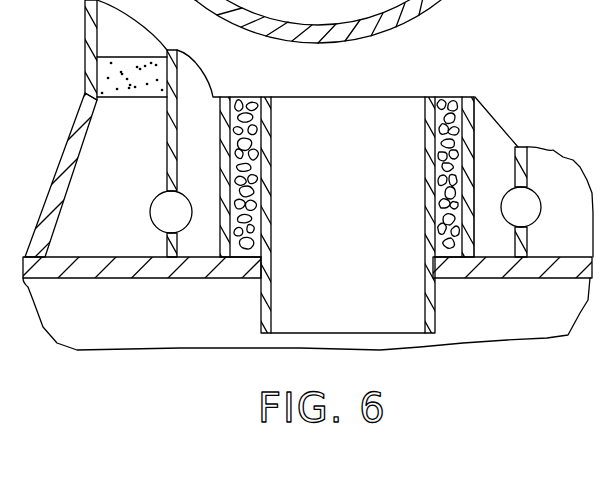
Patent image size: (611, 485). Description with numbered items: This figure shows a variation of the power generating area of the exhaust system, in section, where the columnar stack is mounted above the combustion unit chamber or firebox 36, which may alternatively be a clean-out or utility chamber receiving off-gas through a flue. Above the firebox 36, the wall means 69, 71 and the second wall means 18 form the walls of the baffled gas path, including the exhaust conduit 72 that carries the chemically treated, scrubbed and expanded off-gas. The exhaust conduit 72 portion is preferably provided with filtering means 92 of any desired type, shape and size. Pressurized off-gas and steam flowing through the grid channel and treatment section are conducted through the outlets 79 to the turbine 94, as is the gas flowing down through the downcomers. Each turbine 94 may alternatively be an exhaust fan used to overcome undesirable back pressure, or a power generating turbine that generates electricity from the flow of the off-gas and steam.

The second wall means 18 is at (166, 128).
The firebox 36 is at (140, 333).
The wall means 69 is at (424, 158).
The wall means 71 is at (474, 150).
The exhaust conduit 72 is at (135, 48).
The outlets 79 is at (221, 204).
The filtering means 92 is at (108, 70).
The exhaust fan / turbine 94 is at (150, 210).